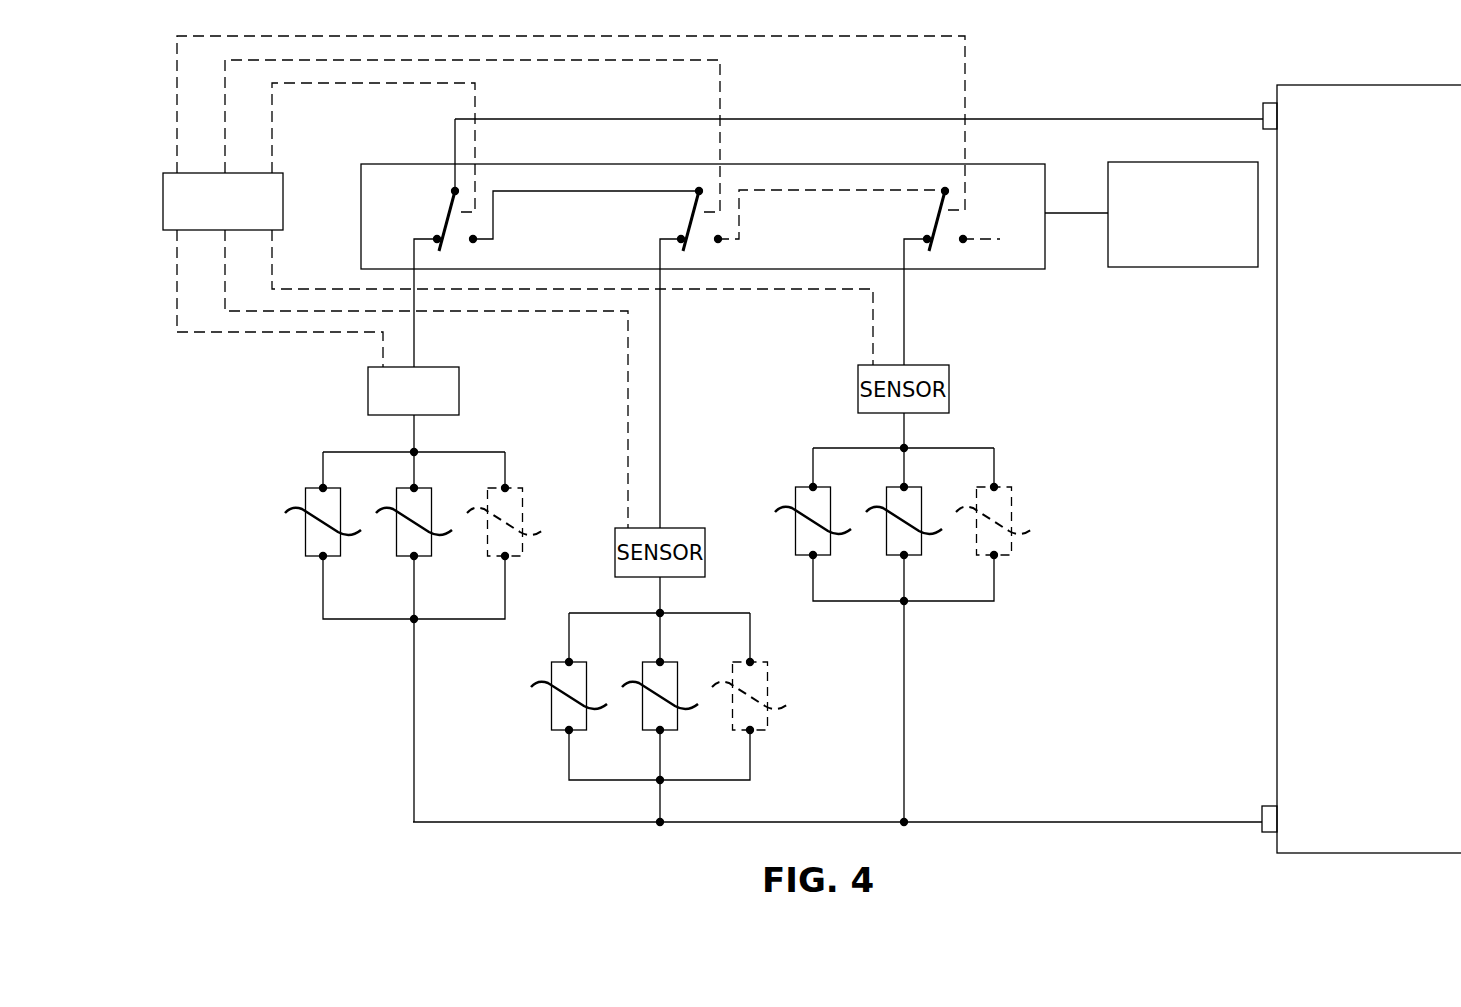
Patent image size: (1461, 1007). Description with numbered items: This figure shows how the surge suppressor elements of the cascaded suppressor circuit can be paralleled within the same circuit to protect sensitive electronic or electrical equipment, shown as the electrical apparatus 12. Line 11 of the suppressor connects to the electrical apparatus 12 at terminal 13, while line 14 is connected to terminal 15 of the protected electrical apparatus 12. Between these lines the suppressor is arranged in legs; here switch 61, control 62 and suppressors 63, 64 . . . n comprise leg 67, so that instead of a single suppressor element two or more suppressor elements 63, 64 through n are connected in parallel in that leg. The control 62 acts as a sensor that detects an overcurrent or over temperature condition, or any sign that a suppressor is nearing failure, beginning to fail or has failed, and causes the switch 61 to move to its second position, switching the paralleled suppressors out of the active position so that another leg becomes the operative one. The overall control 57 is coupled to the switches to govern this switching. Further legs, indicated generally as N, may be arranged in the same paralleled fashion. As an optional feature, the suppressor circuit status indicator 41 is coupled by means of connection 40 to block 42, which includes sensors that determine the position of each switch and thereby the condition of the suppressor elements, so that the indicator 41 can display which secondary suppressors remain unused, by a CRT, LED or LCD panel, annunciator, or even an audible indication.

The line 11 is at (1015, 117).
The electrical apparatus 12 is at (1345, 85).
The terminal 13 is at (1265, 103).
The line 14 is at (1150, 822).
The terminal 15 is at (1265, 806).
The connection 40 is at (1073, 215).
The status indicator 41 is at (1150, 268).
The block 42 is at (1020, 271).
The control 57 is at (285, 183).
The switch 61 is at (446, 222).
The control 62 is at (368, 386).
The suppressor 63 is at (306, 536).
The suppressor 64 is at (396, 536).
The leg 67 is at (401, 618).
The nth suppressor n is at (487, 538).
The Nth surge suppression array N is at (1058, 432).